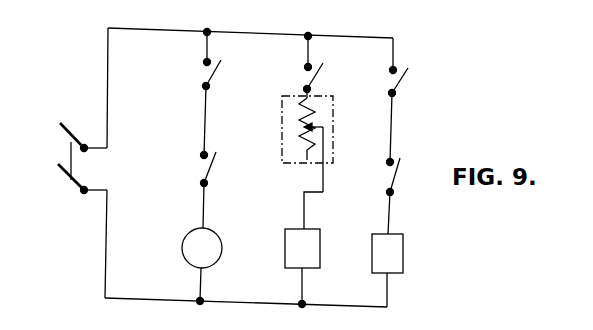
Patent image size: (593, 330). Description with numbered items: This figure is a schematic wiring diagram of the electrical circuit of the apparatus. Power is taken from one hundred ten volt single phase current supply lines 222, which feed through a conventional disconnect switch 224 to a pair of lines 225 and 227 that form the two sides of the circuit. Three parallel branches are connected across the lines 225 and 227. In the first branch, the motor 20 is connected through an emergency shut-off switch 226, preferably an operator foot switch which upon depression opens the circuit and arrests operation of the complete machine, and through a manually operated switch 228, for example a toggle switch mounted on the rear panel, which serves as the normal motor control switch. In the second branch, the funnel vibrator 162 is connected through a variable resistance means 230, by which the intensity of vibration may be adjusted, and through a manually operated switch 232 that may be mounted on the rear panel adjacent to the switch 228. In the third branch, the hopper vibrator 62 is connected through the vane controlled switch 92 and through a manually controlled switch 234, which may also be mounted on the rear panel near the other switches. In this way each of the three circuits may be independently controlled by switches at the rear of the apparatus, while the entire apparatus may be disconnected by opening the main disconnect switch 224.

The motor 20 is at (183, 247).
The hopper vibrator 62 is at (403, 262).
The vane controlled switch 92 is at (397, 177).
The funnel vibrator 162 is at (320, 257).
The current supply lines 222 is at (50, 134).
The disconnect switch 224 is at (67, 184).
The line 225 is at (107, 88).
The emergency shut-off switch 226 is at (208, 170).
The line 227 is at (104, 245).
The manually operated switch 228 is at (212, 76).
The variable resistance means 230 is at (333, 143).
The manually operated switch 232 is at (312, 78).
The manually controlled switch 234 is at (404, 77).